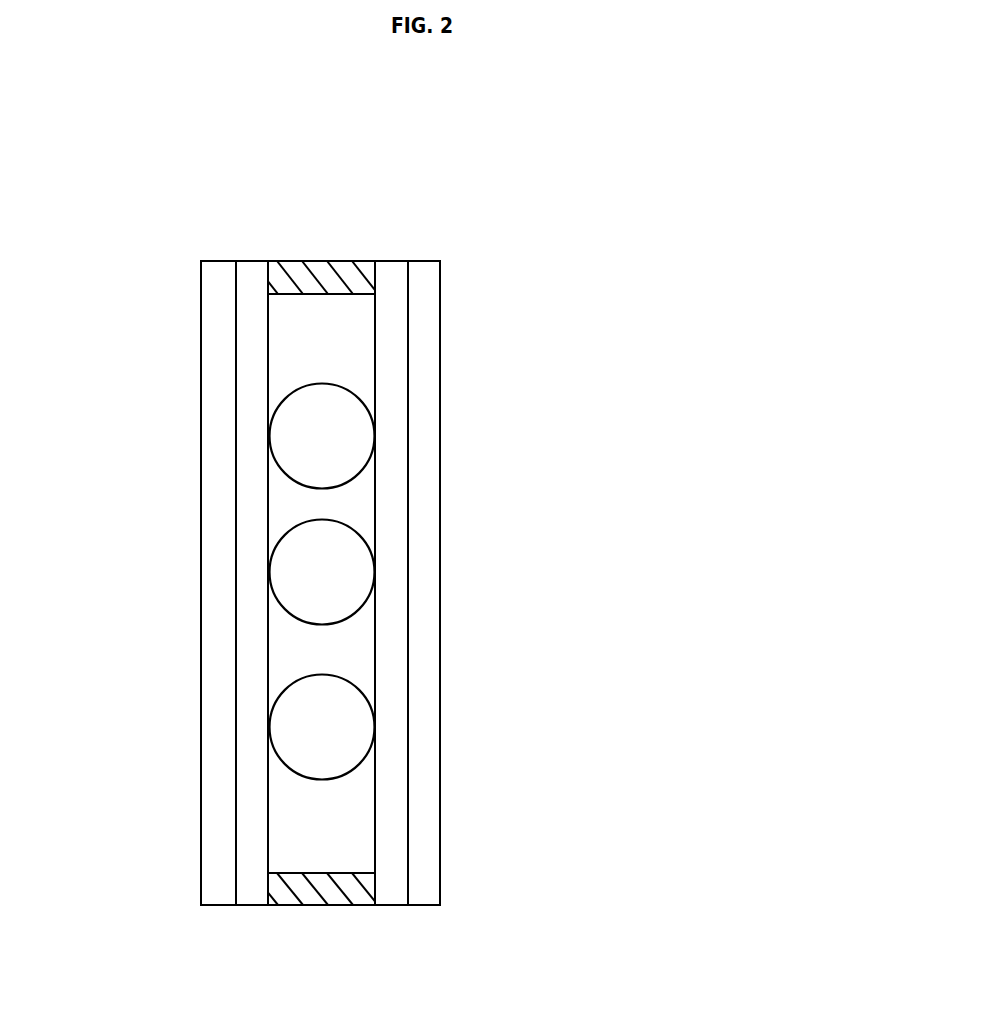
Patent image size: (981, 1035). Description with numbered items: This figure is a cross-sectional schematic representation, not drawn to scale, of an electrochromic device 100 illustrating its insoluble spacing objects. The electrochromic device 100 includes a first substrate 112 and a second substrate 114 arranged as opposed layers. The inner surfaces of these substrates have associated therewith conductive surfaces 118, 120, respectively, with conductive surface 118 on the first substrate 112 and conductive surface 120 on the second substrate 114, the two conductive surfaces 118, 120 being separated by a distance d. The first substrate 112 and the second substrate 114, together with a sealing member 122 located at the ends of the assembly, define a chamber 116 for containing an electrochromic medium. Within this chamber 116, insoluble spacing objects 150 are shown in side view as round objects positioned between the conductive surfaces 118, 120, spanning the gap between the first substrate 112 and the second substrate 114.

The electrochromic device 100 is at (256, 543).
The first substrate 112 is at (215, 543).
The second substrate 114 is at (427, 368).
The chamber 116 is at (340, 812).
The conductive surface 118 is at (246, 717).
The conductive surface 120 is at (397, 348).
The sealing member 122 is at (352, 278).
The insoluble spacing objects 150 is at (332, 447).